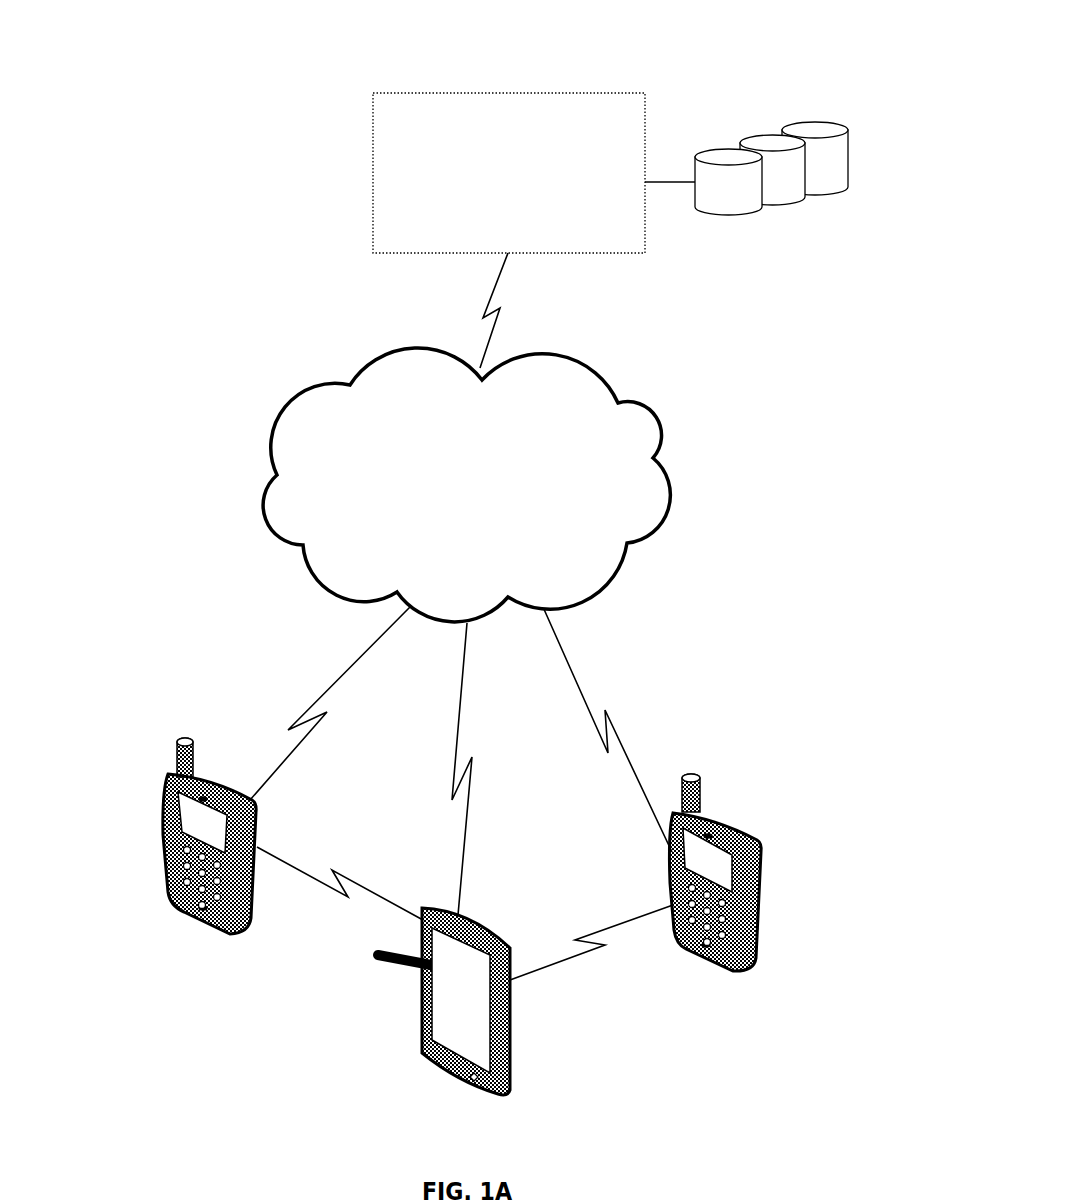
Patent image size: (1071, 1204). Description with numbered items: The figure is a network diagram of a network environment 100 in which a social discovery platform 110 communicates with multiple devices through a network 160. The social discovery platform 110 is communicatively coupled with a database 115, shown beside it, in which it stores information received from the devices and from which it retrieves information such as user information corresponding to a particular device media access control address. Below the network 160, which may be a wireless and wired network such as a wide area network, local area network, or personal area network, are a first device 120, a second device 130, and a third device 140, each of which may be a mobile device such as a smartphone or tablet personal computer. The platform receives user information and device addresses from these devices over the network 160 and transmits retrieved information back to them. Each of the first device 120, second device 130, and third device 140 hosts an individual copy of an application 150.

The network environment 100 is at (702, 42).
The social discovery platform 110 is at (527, 214).
The database 115 is at (772, 203).
The first device 120 is at (173, 905).
The second device 130 is at (422, 1052).
The third device 140 is at (748, 967).
The application 150 is at (208, 832).
The network 160 is at (485, 516).